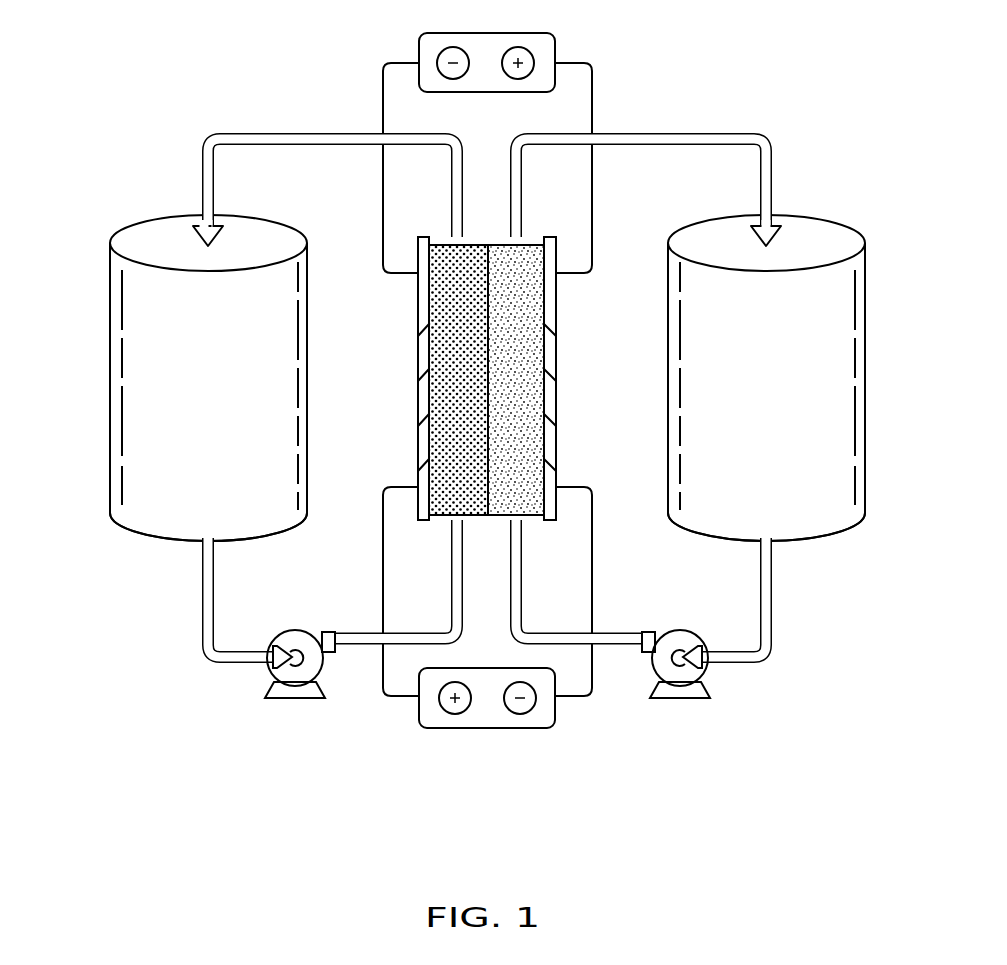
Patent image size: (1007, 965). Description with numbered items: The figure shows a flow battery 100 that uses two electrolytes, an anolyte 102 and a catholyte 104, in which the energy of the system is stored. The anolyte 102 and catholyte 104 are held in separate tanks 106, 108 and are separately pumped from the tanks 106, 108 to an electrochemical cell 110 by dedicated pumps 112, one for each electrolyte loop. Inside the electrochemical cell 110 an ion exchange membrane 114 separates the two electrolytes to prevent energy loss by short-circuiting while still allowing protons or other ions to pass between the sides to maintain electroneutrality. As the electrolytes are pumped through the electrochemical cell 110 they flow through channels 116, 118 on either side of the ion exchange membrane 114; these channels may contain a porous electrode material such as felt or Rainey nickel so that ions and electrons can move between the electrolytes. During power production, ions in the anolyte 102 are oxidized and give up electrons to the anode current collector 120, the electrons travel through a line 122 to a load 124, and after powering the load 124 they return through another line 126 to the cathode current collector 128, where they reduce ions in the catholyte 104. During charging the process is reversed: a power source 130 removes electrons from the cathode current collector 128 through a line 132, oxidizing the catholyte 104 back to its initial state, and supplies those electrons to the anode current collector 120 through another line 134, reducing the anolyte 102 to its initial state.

The flow battery 100 is at (489, 436).
The anolyte 102 is at (158, 382).
The catholyte 104 is at (820, 380).
The tank 106 is at (172, 541).
The tank 108 is at (792, 541).
The electrochemical cell 110 is at (476, 378).
The pumps 112 is at (301, 700).
The ion exchange membrane 114 is at (490, 440).
The channel 116 is at (447, 345).
The channel 118 is at (548, 345).
The anode current collector 120 is at (423, 415).
The line 122 is at (383, 96).
The load 124 is at (458, 33).
The line 126 is at (593, 185).
The cathode current collector 128 is at (552, 420).
The power source 130 is at (419, 705).
The line 132 is at (596, 565).
The line 134 is at (381, 578).